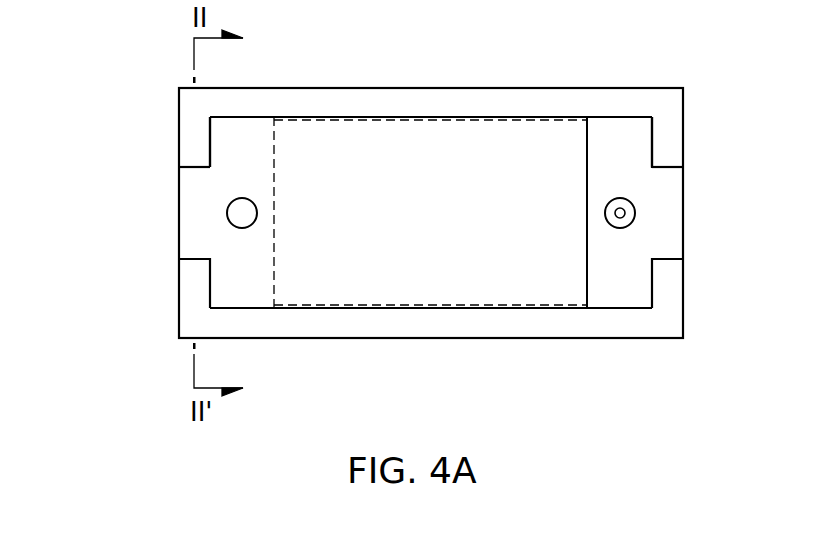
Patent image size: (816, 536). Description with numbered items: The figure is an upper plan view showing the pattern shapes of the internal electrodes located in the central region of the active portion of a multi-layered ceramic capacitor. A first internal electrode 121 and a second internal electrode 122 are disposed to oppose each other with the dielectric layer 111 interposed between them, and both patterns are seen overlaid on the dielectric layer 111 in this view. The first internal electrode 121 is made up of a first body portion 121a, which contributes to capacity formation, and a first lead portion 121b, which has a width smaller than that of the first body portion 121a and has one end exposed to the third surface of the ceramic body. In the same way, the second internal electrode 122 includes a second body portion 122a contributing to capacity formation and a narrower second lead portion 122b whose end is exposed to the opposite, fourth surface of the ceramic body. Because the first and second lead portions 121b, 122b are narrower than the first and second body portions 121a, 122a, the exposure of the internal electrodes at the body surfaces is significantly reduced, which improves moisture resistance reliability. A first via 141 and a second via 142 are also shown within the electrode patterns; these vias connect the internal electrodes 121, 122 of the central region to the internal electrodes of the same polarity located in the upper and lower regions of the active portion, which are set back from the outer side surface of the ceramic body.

The dielectric layer 111 is at (418, 318).
The first internal electrode 121 is at (98, 125).
The first body portion 121a is at (216, 132).
The first lead portion 121b is at (205, 182).
The second internal electrode 122 is at (693, 42).
The second body portion 122a is at (615, 133).
The second lead portion 122b is at (663, 180).
The first via 141 is at (235, 215).
The second via 142 is at (635, 218).